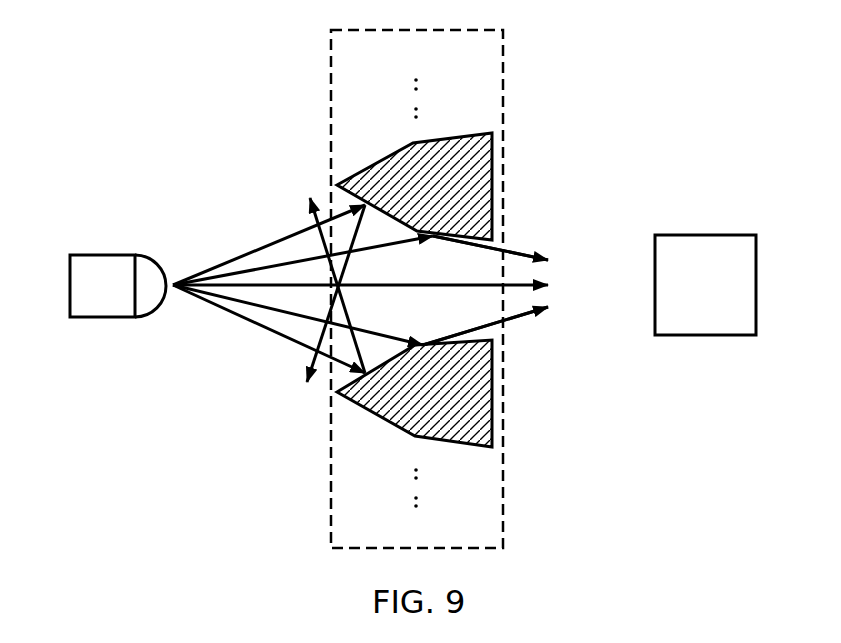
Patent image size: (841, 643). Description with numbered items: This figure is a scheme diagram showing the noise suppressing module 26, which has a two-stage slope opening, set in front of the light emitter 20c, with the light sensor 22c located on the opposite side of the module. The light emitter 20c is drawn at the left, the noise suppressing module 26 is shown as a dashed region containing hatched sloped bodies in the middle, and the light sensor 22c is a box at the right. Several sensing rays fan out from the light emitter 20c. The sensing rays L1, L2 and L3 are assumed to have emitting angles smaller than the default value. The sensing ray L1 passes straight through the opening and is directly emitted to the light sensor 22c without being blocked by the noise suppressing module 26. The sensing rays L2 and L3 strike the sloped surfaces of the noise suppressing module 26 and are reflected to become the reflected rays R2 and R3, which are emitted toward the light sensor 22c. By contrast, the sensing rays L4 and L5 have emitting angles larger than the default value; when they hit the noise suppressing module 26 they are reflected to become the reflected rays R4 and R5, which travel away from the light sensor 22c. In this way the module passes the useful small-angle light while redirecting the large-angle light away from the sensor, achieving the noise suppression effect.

The noise suppressing module 26 is at (330, 76).
The light emitter 20c is at (96, 254).
The light sensor 22c is at (690, 335).
The sensing ray L1 is at (360, 274).
The sensing ray L2 is at (360, 260).
The sensing ray L3 is at (360, 315).
The sensing ray L4 is at (269, 245).
The sensing ray L5 is at (269, 329).
The reflected ray R2 is at (493, 245).
The reflected ray R3 is at (500, 330).
The reflected ray R4 is at (326, 309).
The reflected ray R5 is at (329, 274).